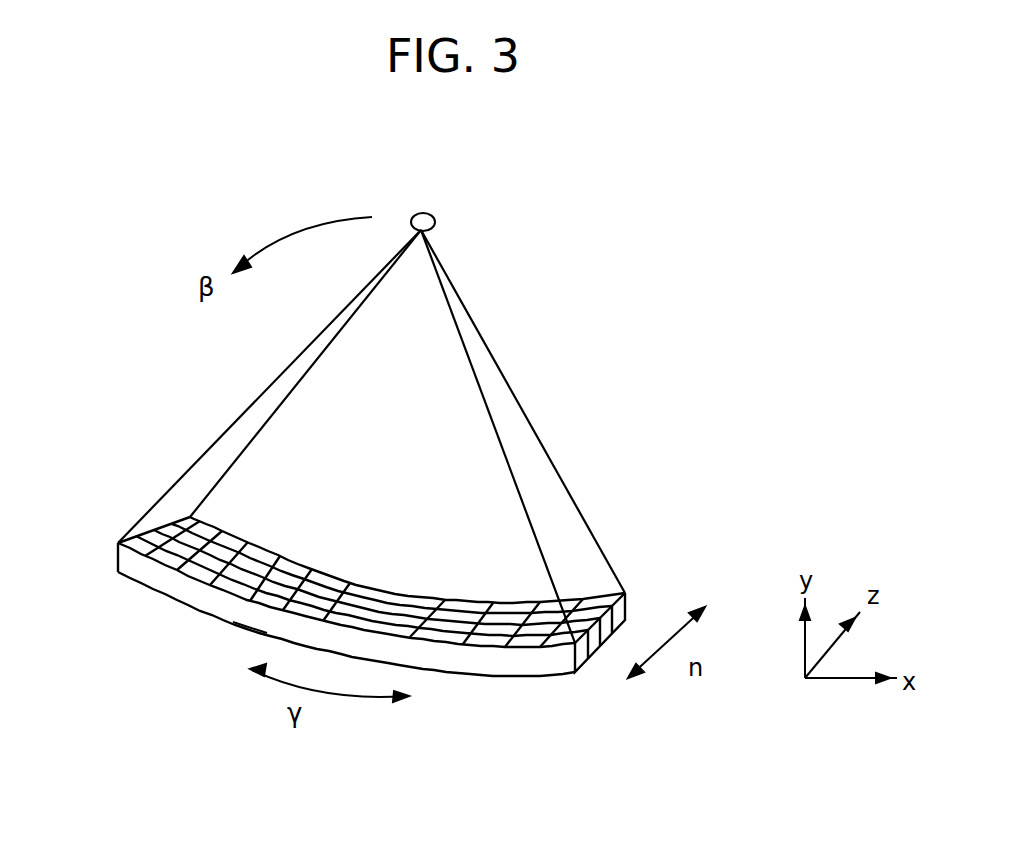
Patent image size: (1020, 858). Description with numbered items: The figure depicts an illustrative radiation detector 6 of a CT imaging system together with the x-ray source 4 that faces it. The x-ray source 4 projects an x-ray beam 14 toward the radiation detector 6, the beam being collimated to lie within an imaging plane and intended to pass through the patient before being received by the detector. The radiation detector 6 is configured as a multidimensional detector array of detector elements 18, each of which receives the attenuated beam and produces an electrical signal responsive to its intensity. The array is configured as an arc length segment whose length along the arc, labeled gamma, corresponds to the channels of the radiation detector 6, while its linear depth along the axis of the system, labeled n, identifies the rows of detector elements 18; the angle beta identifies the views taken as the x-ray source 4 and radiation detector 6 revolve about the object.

The x-ray source 4 is at (434, 215).
The radiation detector 6 is at (150, 571).
The x-ray beam 14 is at (476, 325).
The detector elements 18 is at (233, 622).